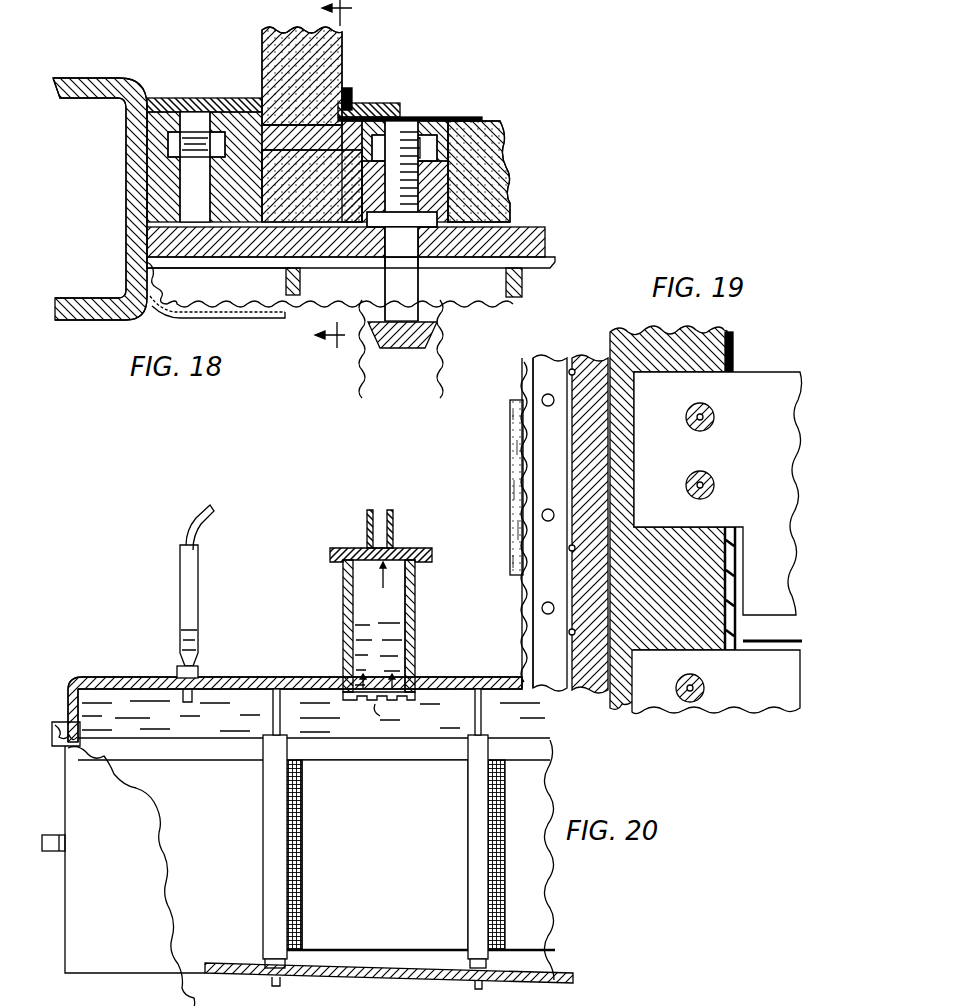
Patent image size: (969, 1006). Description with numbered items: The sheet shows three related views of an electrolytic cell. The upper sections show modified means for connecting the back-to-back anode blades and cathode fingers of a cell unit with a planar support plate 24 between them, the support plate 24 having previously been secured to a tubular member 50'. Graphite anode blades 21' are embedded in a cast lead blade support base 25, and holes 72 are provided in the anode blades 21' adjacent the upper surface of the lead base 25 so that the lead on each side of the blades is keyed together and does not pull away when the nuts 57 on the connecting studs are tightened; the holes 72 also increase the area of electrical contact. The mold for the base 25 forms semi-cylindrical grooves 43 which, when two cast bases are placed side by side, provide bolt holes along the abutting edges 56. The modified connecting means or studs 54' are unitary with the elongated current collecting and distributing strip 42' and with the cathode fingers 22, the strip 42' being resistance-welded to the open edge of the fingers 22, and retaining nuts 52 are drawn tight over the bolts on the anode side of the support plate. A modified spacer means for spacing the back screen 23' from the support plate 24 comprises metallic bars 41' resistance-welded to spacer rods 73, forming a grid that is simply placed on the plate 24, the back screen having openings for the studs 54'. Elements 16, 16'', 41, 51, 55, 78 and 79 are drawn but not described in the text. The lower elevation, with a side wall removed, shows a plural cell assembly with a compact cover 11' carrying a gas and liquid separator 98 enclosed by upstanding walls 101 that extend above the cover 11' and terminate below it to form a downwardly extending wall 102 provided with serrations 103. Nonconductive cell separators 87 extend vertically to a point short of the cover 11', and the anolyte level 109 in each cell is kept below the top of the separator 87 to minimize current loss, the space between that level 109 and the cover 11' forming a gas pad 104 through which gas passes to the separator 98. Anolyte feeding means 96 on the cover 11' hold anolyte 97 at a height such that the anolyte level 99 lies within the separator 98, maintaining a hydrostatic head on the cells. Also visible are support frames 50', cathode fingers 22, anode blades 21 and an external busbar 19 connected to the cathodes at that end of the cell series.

In FIG. 20, the cover 11' is at (295, 689).
In FIG. 19, the plate edge 16 is at (753, 481).
In FIG. 18, the mounting plate 16'' is at (204, 88).
In FIG. 18, the external busbar 19 is at (345, 179).
In FIG. 20, the external busbar 19 is at (52, 835).
In FIG. 20, the anode blades 21 is at (316, 859).
In FIG. 18, the anode blades 21' is at (294, 124).
In FIG. 19, the anode blades 21' is at (717, 545).
In FIG. 18, the cathode fingers 22 is at (362, 380).
In FIG. 20, the cathode fingers 22 is at (300, 807).
In FIG. 18, the back screen 23' is at (330, 300).
In FIG. 19, the back screen 23' is at (512, 523).
In FIG. 18, the planar support plate 24 is at (238, 258).
In FIG. 18, the lead blade support base 25 is at (246, 193).
In FIG. 19, the lead blade support base 25 is at (668, 338).
In FIG. 19, the plate 41 is at (550, 514).
In FIG. 18, the metallic bars 41' is at (312, 281).
In FIG. 18, the current collecting and distributing strip 42' is at (402, 345).
In FIG. 18, the semi-cylindrical grooves 43 is at (246, 104).
In FIG. 18, the tubular member 50' is at (100, 199).
In FIG. 20, the tubular member 50' is at (355, 862).
In FIG. 18, the coating 51 is at (247, 310).
In FIG. 19, the coating 51 is at (510, 527).
In FIG. 18, the retaining nuts 52 is at (418, 232).
In FIG. 18, the studs 54' is at (405, 122).
In FIG. 18, the pin 55 is at (506, 286).
In FIG. 19, the pin 55 is at (540, 609).
In FIG. 18, the abutting edges 56 is at (420, 192).
In FIG. 18, the base-holding nuts 57 is at (402, 149).
In FIG. 18, the holes 72 is at (308, 128).
In FIG. 19, the holes 72 is at (702, 476).
In FIG. 18, the spacer rods 73 is at (444, 262).
In FIG. 19, the spacer rods 73 is at (588, 366).
In FIG. 18, the seal 78 is at (349, 92).
In FIG. 18, the block 79 is at (447, 139).
In FIG. 20, the cell separators 87 is at (270, 718).
In FIG. 20, the anolyte feeding means 96 is at (176, 586).
In FIG. 20, the anolyte 97 is at (186, 634).
In FIG. 20, the gas and liquid separator 98 is at (340, 604).
In FIG. 20, the anolyte level 99 is at (386, 632).
In FIG. 20, the separator wall 101 is at (415, 624).
In FIG. 20, the downwardly extending wall 102 is at (352, 702).
In FIG. 20, the serrations 103 is at (388, 702).
In FIG. 20, the gas pad 104 is at (436, 696).
In FIG. 20, the anolyte level 109 is at (98, 700).